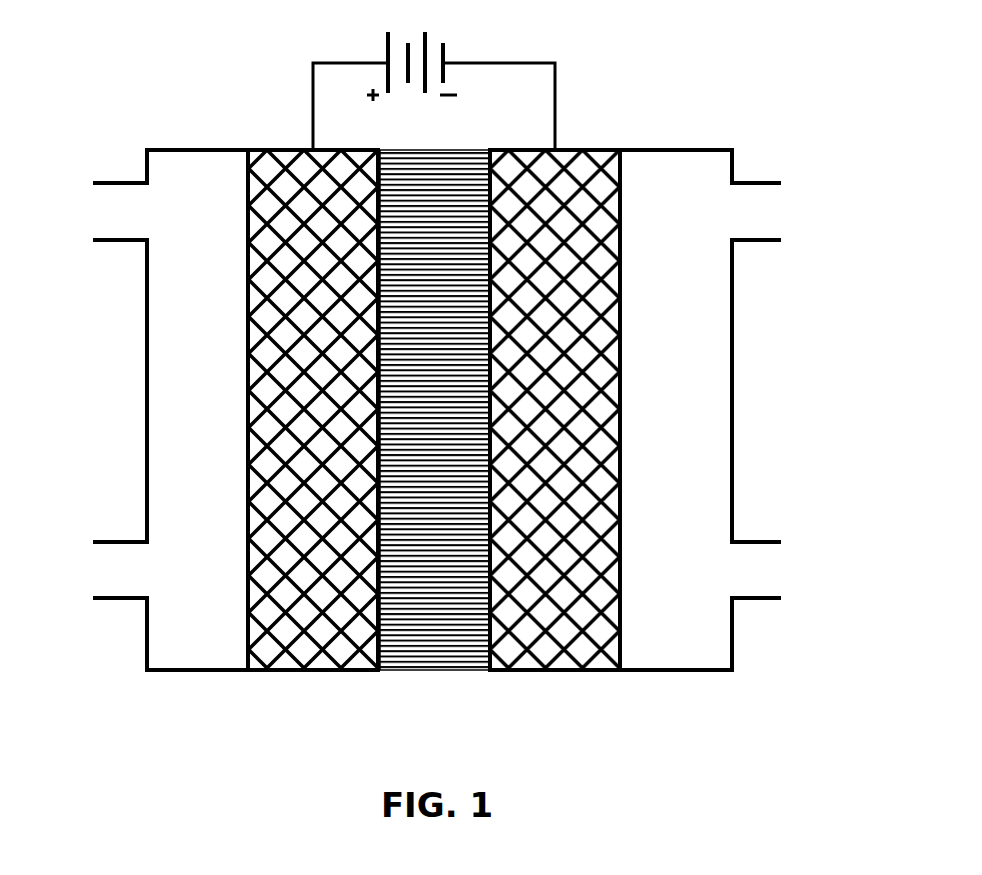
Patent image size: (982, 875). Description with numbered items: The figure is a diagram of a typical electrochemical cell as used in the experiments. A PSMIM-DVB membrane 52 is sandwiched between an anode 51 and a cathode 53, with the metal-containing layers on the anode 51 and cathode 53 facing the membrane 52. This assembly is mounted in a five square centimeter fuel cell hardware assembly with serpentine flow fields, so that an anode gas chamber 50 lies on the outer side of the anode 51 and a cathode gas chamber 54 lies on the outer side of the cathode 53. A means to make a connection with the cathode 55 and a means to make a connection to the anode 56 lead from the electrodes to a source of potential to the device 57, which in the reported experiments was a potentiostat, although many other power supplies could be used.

The anode gas chamber 50 is at (210, 673).
The anode 51 is at (315, 673).
The membrane 52 is at (437, 672).
The cathode 53 is at (555, 672).
The cathode gas chamber 54 is at (668, 672).
The means to make a connection with the cathode 55 is at (560, 145).
The means to make a connection to the anode 56 is at (310, 145).
The source of potential 57 is at (456, 41).